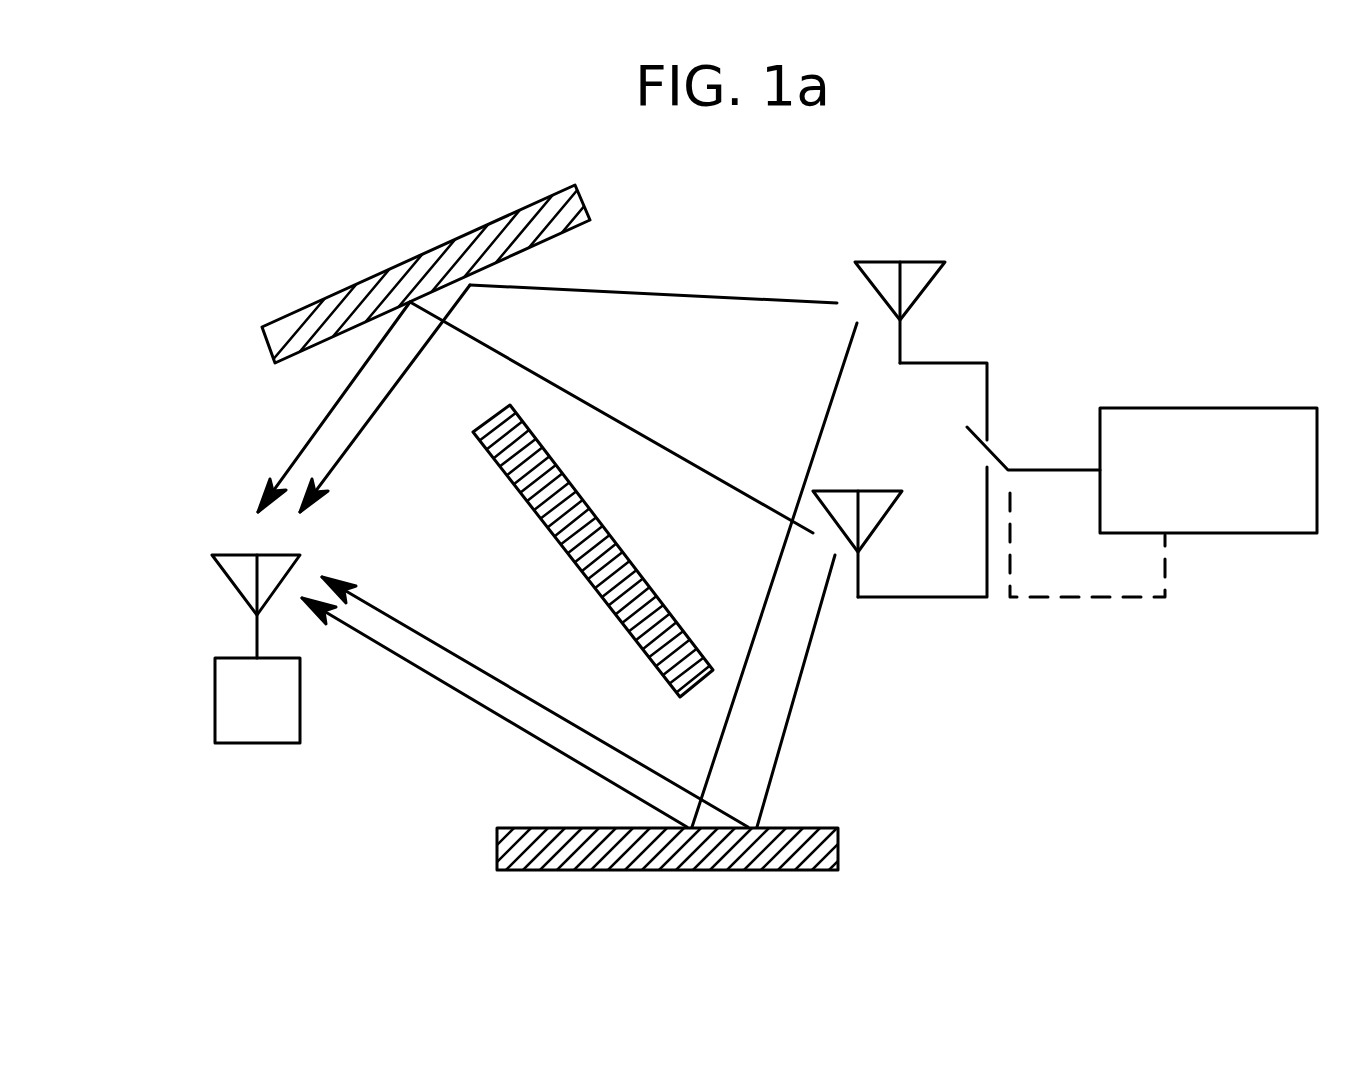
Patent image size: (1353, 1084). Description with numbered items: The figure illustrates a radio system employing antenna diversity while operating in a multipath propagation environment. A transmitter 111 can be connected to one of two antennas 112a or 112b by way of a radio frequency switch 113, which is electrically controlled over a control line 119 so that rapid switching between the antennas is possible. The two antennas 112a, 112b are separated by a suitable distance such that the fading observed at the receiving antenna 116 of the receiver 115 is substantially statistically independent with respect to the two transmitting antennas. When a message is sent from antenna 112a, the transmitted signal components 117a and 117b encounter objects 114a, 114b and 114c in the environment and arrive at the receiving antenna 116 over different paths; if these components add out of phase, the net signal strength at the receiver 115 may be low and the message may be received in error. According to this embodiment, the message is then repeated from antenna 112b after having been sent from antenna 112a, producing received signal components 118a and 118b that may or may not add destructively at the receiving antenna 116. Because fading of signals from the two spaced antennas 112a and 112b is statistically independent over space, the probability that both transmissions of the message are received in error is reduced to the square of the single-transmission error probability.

The transmitter 111 is at (1273, 406).
The antenna 112a is at (920, 260).
The antenna 112b is at (858, 550).
The radio frequency switch 113 is at (986, 448).
The object 114a is at (407, 258).
The object 114b is at (535, 495).
The object 114c is at (627, 870).
The receiver 115 is at (215, 722).
The receiving antenna 116 is at (233, 575).
The transmitted signal component 117a is at (385, 387).
The transmitted signal component 117b is at (427, 683).
The received signal component 118a is at (300, 450).
The received signal component 118b is at (430, 635).
The control line 119 is at (1087, 597).